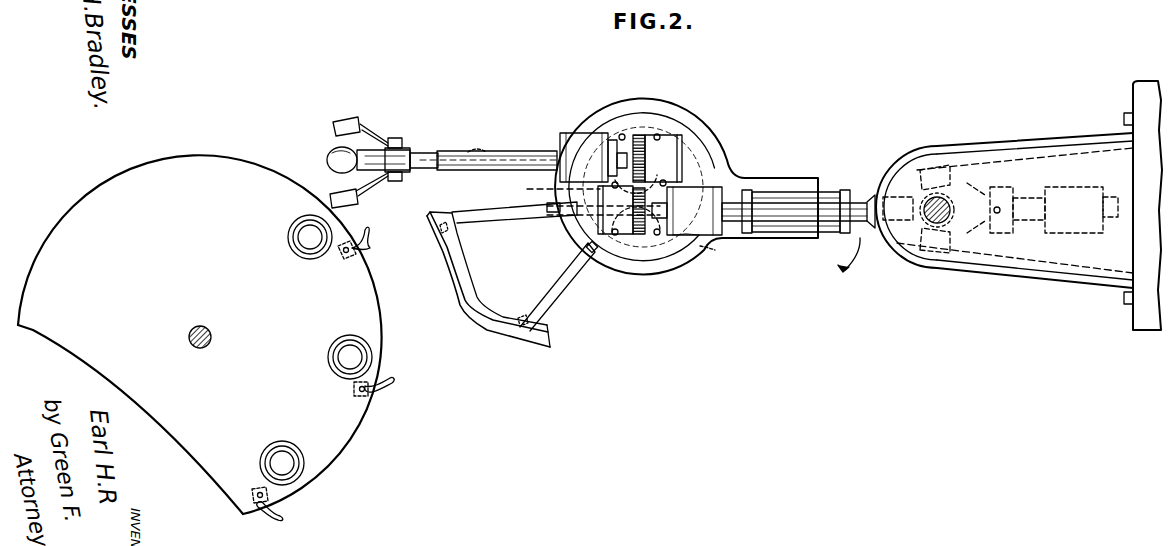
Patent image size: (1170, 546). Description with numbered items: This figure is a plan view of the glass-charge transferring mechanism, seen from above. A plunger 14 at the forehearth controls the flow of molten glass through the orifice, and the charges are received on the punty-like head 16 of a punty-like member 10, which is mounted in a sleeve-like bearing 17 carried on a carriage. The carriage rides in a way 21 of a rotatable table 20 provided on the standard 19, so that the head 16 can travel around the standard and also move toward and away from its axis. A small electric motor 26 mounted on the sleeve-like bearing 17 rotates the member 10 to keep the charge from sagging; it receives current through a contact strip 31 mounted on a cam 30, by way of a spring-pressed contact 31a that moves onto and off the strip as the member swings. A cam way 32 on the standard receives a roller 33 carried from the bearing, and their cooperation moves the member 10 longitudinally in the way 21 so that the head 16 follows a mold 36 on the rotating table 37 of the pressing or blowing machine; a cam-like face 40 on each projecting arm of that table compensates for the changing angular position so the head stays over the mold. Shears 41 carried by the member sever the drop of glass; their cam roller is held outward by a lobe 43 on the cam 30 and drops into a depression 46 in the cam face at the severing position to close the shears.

The punty-like member 10 is at (427, 174).
The plunger 14 is at (942, 203).
The punty-like head 16 is at (329, 156).
The sleeve-like bearing 17 is at (517, 160).
The standard 19 is at (705, 148).
The rotatable table 20 is at (652, 239).
The way 21 is at (662, 147).
The electric motor 26 is at (580, 142).
The cam 30 is at (638, 249).
The contact strip 31 is at (680, 240).
The spring-pressed contact 31a is at (719, 248).
The cam way 32 is at (546, 335).
The roller 33 is at (471, 150).
The mold 36 is at (299, 258).
The rotating table 37 is at (347, 445).
The cam-like face 40 is at (372, 239).
The shears 41 is at (364, 122).
The lobe 43 is at (577, 242).
The depression 46 is at (582, 198).